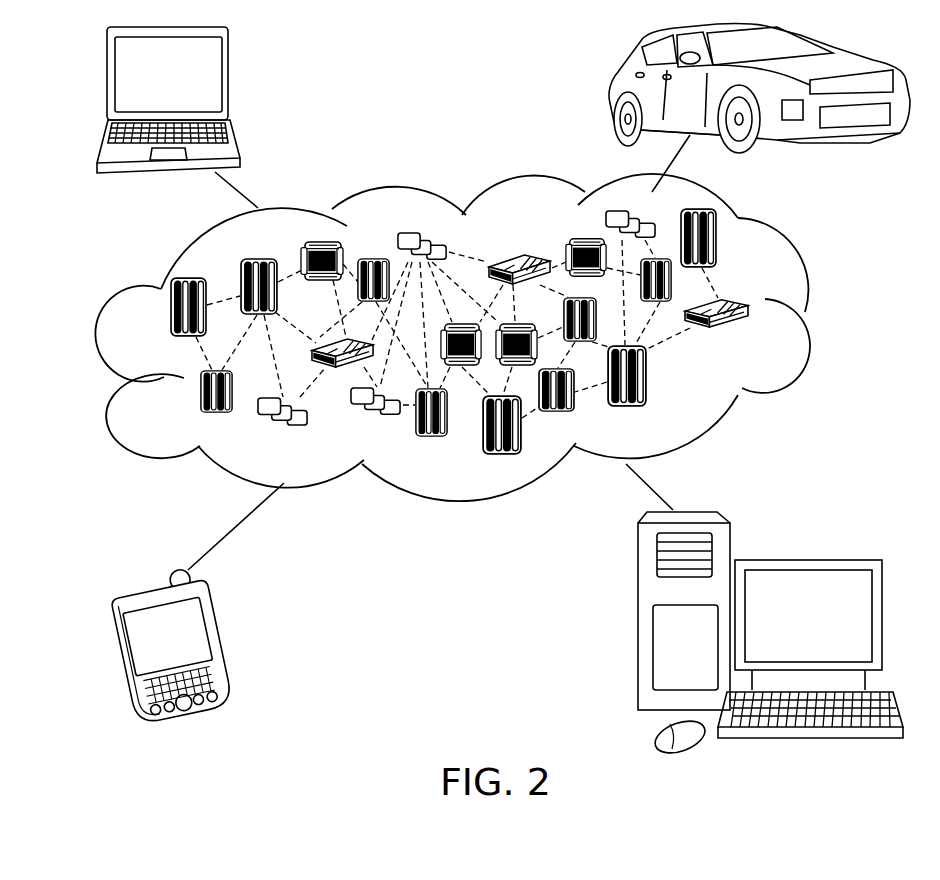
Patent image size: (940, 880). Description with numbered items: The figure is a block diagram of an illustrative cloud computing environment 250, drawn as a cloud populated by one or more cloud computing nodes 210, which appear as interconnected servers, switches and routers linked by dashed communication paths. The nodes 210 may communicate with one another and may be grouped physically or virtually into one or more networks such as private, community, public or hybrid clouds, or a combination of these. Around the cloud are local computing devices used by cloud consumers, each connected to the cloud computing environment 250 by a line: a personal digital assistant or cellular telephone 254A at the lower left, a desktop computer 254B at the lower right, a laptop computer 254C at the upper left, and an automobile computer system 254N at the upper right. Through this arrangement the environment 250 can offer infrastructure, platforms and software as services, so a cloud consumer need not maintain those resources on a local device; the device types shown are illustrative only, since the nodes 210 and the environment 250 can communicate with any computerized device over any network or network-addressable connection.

The cloud computing environment 250 is at (805, 310).
The cloud computing nodes 210 is at (756, 339).
The personal digital assistant (PDA) or cellular telephone 254A is at (223, 645).
The desktop computer 254B is at (805, 557).
The laptop computer 254C is at (228, 82).
The automobile computer system 254N is at (610, 92).